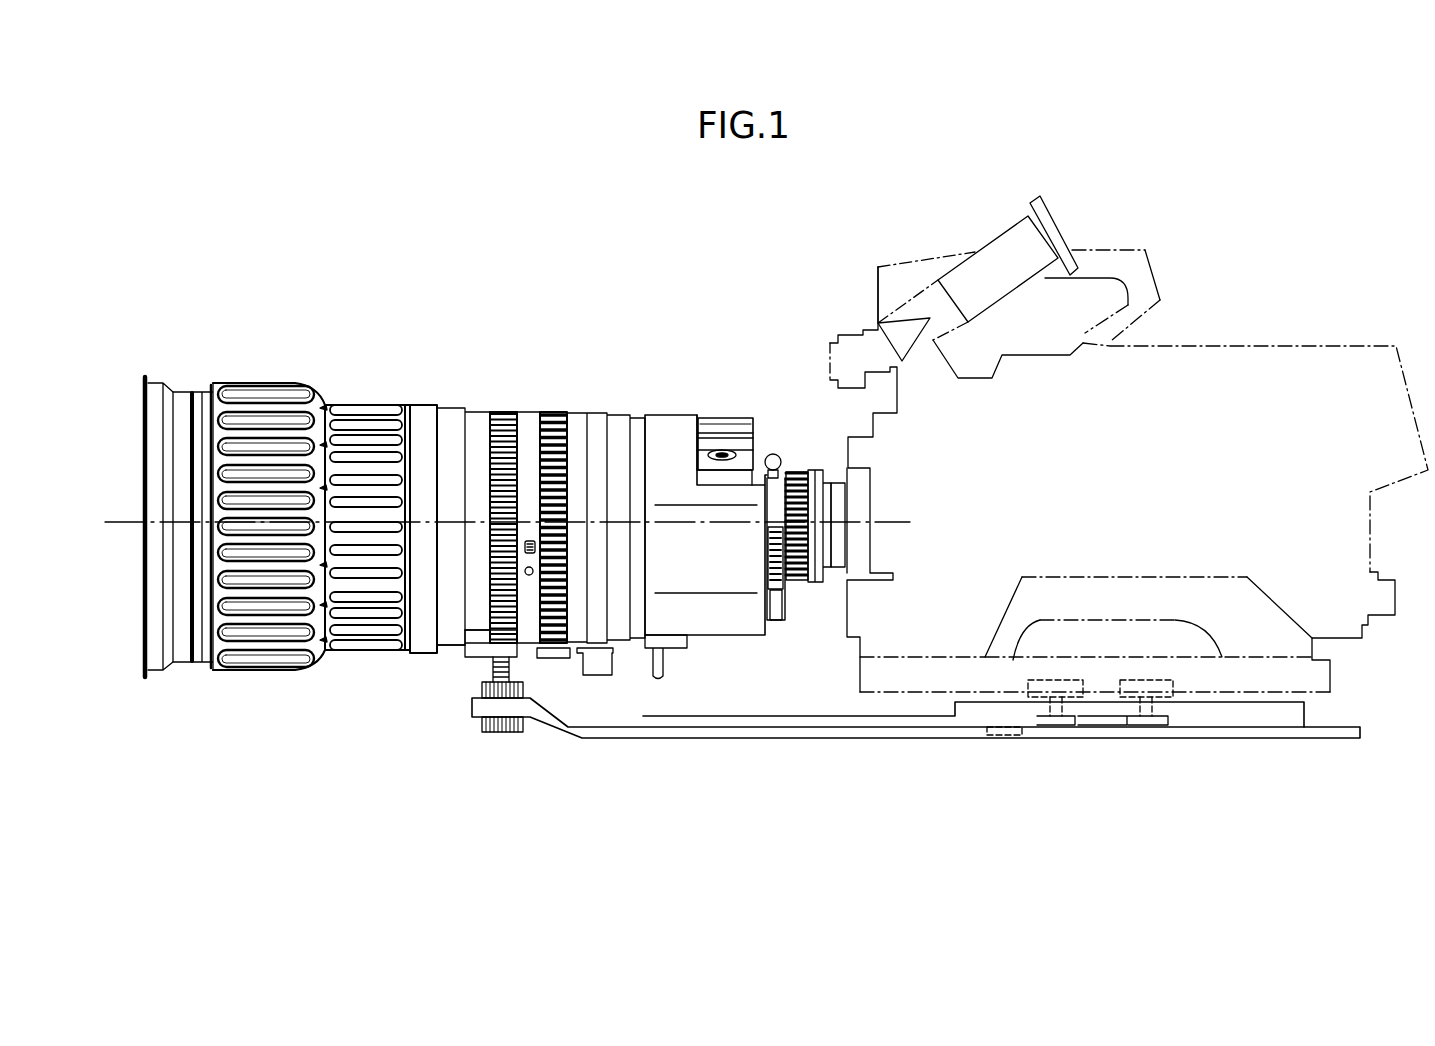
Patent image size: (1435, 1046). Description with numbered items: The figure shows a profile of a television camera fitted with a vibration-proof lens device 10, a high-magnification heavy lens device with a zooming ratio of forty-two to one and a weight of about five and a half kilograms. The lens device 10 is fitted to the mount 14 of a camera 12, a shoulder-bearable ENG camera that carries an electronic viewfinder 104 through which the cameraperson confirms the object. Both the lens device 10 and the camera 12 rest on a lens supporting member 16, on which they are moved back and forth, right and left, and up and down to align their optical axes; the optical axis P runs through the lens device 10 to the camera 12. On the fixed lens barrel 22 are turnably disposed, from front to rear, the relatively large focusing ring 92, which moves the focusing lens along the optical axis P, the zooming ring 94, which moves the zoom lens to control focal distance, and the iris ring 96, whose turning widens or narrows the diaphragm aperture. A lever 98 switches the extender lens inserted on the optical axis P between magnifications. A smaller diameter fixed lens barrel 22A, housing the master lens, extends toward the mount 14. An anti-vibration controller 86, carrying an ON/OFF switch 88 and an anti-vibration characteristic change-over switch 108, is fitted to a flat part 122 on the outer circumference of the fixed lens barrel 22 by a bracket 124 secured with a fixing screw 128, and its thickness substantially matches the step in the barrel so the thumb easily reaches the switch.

The vibration-proof lens device 10 is at (405, 380).
The camera 12 is at (1220, 346).
The mount 14 is at (875, 492).
The lens supporting member 16 is at (855, 733).
The fixed lens barrel 22 is at (455, 424).
The smaller diameter fixed lens barrel 22A is at (810, 575).
The anti-vibration controller 86 is at (744, 437).
The ON/OFF switch 88 is at (720, 446).
The focusing ring 92 is at (325, 395).
The zooming ring 94 is at (502, 412).
The iris ring 96 is at (548, 412).
The lever 98 is at (765, 582).
The electronic viewfinder 104 is at (1000, 217).
The anti-vibration characteristic change-over switch 108 is at (728, 422).
The flat part 122 is at (697, 470).
The bracket 124 is at (758, 500).
The fixing screw 128 is at (783, 593).
The optical axis P is at (120, 532).